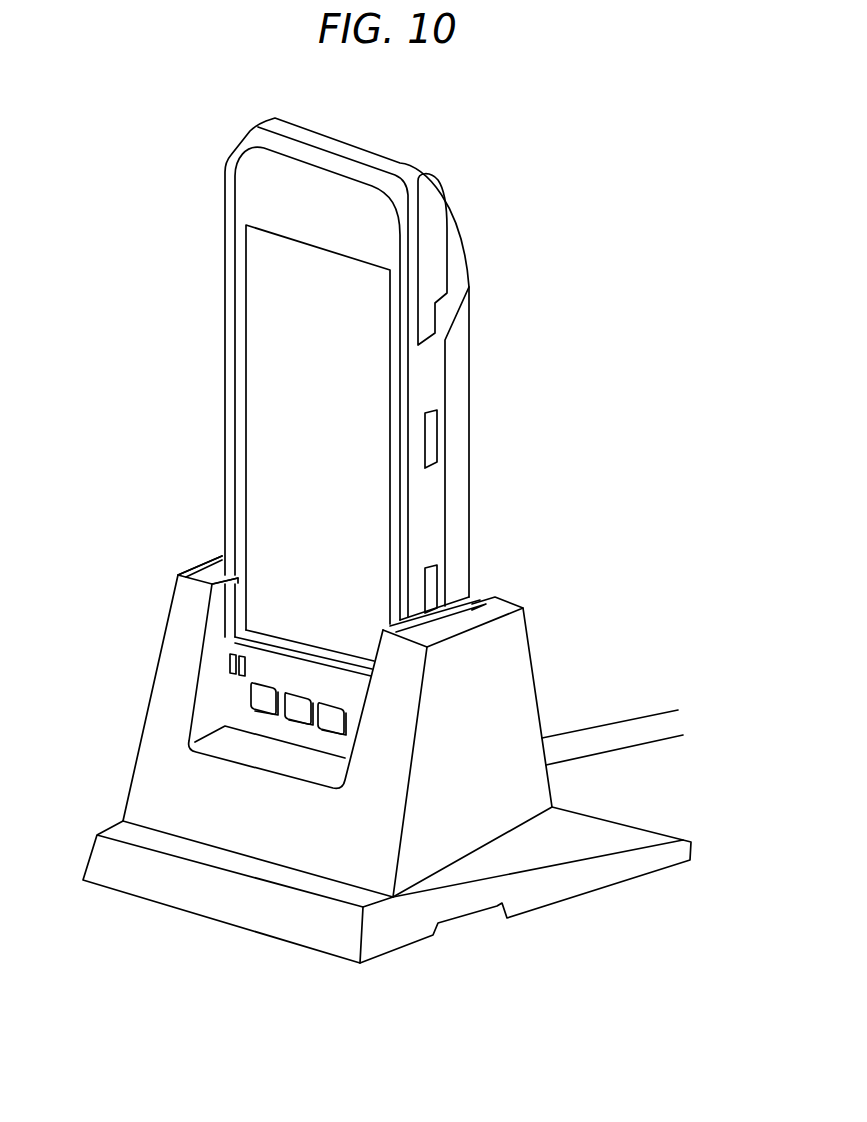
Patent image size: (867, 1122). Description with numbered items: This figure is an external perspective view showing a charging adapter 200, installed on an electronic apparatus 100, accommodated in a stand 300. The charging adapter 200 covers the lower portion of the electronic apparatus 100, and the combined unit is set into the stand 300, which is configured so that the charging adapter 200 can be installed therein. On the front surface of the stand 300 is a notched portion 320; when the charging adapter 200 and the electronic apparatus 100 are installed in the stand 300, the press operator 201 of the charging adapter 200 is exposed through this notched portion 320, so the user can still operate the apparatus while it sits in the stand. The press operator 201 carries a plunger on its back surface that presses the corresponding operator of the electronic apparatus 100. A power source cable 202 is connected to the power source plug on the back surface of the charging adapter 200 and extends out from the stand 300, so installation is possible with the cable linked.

The electronic apparatus 100 is at (355, 190).
The charging adapter 200 is at (223, 620).
The press operator 201 is at (252, 692).
The power source cable 202 is at (635, 730).
The stand 300 is at (497, 657).
The notched portion 320 is at (207, 715).